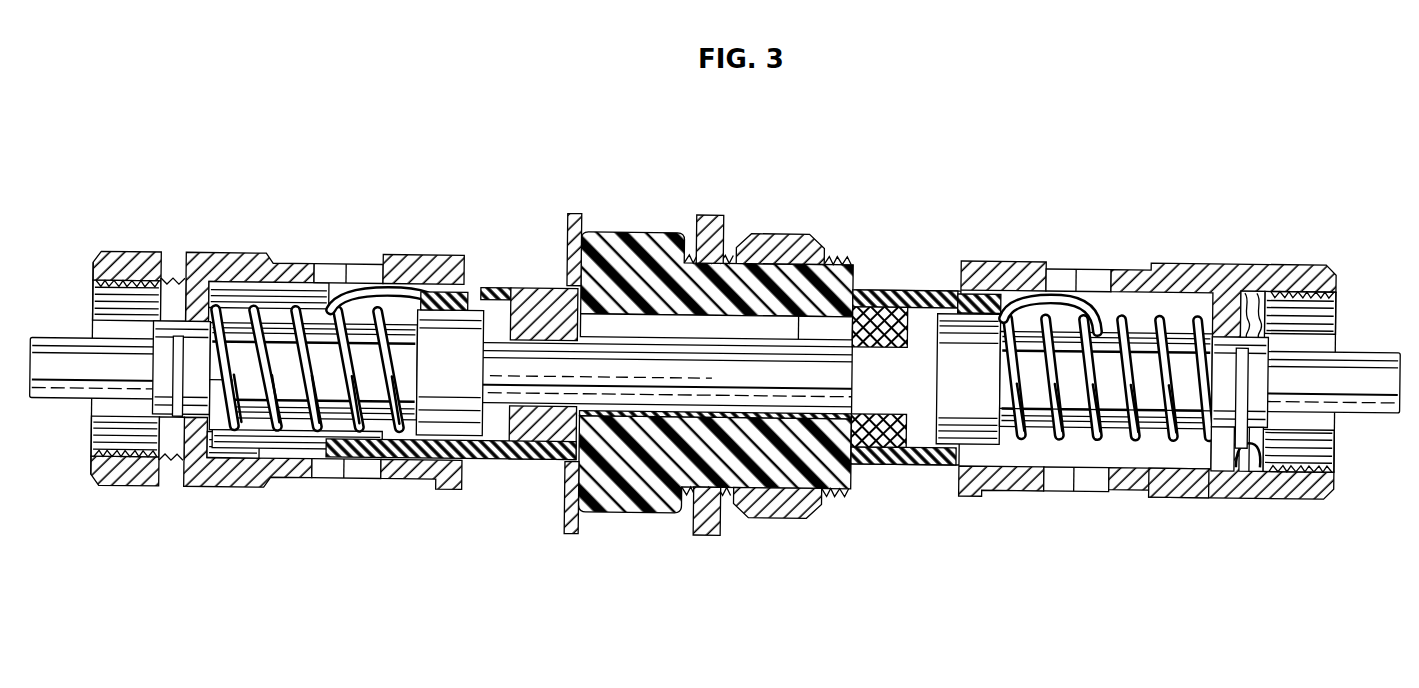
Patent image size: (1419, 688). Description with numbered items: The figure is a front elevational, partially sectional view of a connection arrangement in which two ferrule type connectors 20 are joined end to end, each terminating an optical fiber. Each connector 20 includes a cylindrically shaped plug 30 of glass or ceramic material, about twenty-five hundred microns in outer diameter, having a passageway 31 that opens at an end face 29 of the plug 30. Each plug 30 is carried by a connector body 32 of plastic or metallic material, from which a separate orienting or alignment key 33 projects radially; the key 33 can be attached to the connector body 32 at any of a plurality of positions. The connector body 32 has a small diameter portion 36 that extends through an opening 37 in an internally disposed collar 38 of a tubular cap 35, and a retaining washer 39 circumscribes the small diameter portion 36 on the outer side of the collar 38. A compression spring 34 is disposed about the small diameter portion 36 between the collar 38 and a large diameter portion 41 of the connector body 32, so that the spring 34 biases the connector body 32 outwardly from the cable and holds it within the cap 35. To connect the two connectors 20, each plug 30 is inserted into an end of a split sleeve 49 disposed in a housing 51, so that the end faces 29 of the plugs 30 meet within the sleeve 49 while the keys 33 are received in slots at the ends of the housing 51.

The ferrule type connector 20 is at (714, 318).
The end face 29 is at (767, 356).
The plug 30 is at (716, 321).
The passageway 31 is at (452, 350).
The connector body 32 is at (905, 407).
The alignment key 33 is at (984, 265).
The compression spring 34 is at (1106, 327).
The tubular cap 35 is at (1178, 515).
The small diameter portion 36 is at (1105, 479).
The opening 37 is at (1271, 340).
The collar 38 is at (1219, 489).
The retaining washer 39 is at (1261, 490).
The large diameter portion 41 is at (968, 432).
The split sleeve 49 is at (715, 409).
The housing 51 is at (644, 394).